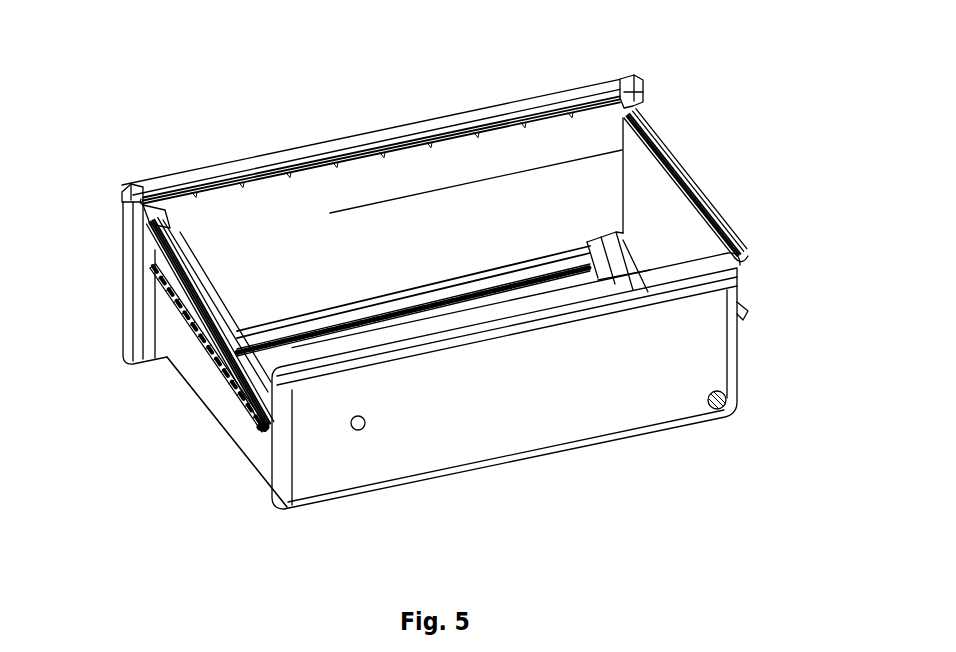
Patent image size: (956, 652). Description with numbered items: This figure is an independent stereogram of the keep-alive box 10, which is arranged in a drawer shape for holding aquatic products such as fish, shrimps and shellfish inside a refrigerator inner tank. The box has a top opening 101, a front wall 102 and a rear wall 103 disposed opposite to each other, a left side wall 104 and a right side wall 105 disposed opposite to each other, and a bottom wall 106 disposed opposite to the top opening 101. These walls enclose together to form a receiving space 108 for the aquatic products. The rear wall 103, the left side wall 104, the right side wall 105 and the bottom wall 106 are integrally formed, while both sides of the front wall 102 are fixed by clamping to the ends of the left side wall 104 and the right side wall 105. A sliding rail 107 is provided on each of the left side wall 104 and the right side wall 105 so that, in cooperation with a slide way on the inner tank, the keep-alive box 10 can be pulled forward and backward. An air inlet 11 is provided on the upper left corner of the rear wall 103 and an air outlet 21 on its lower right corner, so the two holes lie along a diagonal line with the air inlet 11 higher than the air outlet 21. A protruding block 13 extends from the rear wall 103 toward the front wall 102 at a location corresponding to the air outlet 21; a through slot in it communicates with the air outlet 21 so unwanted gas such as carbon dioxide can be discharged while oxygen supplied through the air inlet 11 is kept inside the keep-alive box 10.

The keep-alive box 10 is at (230, 175).
The top opening 101 is at (330, 213).
The front wall 102 is at (373, 193).
The rear wall 103 is at (507, 428).
The left side wall 104 is at (683, 243).
The right side wall 105 is at (220, 403).
The bottom wall 106 is at (500, 307).
The sliding rail 107 is at (200, 353).
The receiving space 108 is at (585, 185).
The air inlet 11 is at (358, 431).
The protruding block 13 is at (627, 260).
The air outlet 21 is at (724, 410).